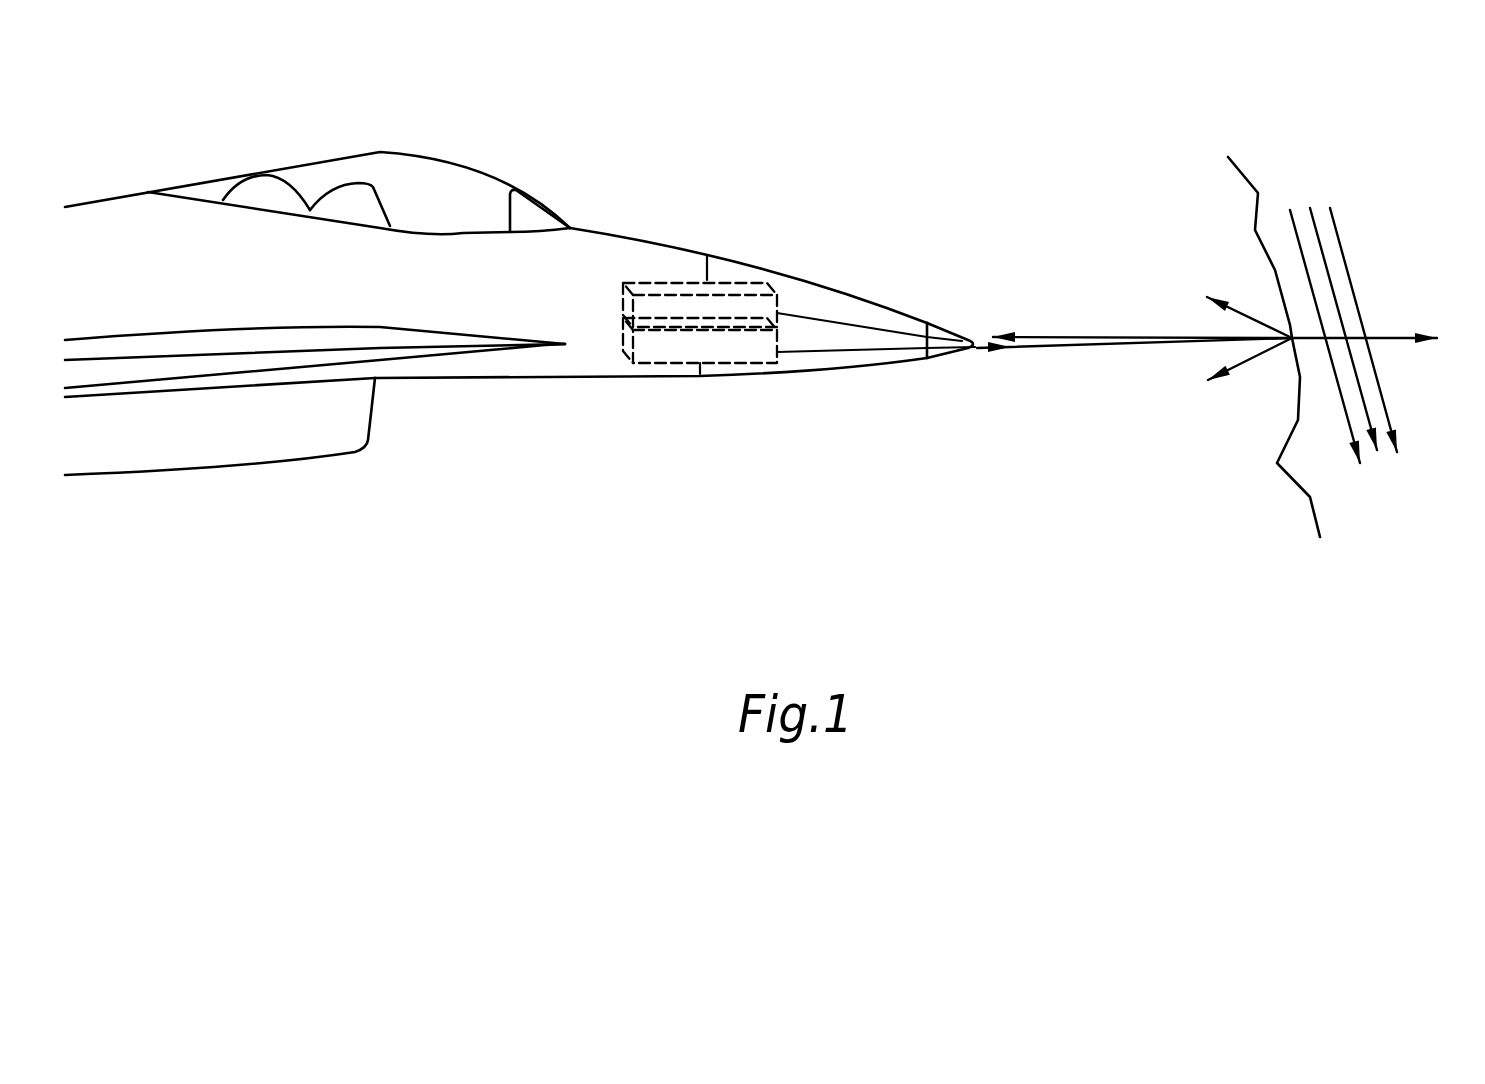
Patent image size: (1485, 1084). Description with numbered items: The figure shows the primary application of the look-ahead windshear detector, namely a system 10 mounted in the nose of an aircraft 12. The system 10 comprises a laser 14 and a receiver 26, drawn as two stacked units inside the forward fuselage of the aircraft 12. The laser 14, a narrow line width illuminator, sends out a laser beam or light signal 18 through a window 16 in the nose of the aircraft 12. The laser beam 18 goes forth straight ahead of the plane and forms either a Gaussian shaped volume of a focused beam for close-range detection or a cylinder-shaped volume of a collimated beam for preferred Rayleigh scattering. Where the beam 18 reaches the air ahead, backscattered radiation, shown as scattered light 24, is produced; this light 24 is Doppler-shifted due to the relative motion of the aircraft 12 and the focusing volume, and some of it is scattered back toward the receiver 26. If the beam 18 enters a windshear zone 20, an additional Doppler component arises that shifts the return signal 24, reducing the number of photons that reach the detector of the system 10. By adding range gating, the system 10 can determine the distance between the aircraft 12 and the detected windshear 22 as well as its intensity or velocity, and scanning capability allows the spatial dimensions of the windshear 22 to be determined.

The system 10 is at (650, 282).
The aircraft 12 is at (689, 252).
The laser 14 is at (633, 342).
The window 16 is at (943, 358).
The laser beam 18 is at (1088, 350).
The windshear zone 20 is at (1307, 498).
The windshear 22 is at (1290, 205).
The scattered light 24 is at (1073, 337).
The receiver 26 is at (622, 307).